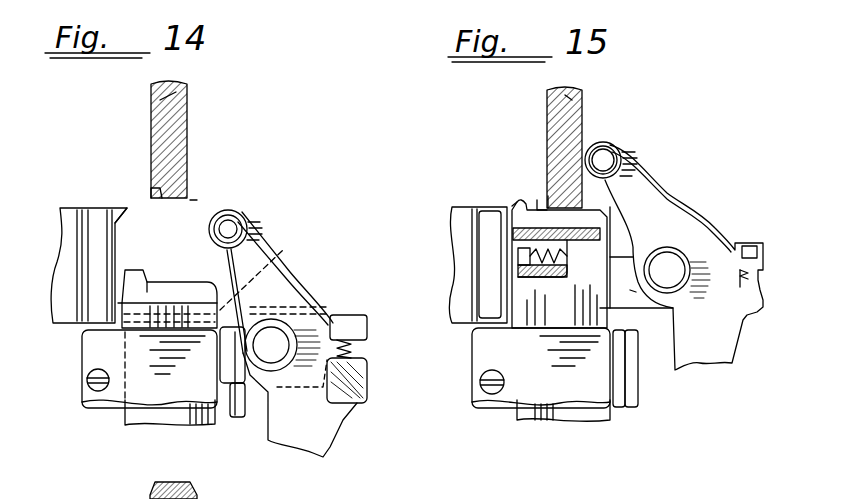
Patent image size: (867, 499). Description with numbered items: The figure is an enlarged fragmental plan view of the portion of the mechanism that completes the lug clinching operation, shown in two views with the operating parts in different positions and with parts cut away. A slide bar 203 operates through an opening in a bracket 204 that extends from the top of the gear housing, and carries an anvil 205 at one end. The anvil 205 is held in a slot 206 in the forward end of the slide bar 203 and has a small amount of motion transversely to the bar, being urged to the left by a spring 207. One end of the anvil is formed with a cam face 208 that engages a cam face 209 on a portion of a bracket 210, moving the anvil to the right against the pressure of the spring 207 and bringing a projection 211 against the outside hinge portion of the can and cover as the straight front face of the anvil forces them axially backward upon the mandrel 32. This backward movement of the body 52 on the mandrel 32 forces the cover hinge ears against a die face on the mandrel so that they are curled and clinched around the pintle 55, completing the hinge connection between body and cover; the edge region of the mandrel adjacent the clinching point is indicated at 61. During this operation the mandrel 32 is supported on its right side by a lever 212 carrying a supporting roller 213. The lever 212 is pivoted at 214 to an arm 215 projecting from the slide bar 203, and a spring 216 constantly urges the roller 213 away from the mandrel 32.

In FIG. 14, the mandrel 32 is at (176, 92).
In FIG. 15, the mandrel 32 is at (565, 95).
In FIG. 14, the body 52 is at (188, 137).
In FIG. 15, the body 52 is at (583, 120).
In FIG. 14, the pintle 55 is at (151, 198).
In FIG. 15, the pintle 55 is at (548, 196).
In FIG. 14, the blade side 61 is at (197, 200).
In FIG. 14, the slide bar 203 is at (190, 412).
In FIG. 15, the slide bar 203 is at (537, 408).
In FIG. 14, the bracket 204 is at (98, 393).
In FIG. 15, the bracket 204 is at (487, 388).
In FIG. 14, the anvil 205 is at (170, 292).
In FIG. 15, the anvil 205 is at (537, 203).
In FIG. 14, the slot 206 is at (280, 272).
In FIG. 15, the spring 207 is at (540, 258).
In FIG. 14, the cam face 208 is at (121, 276).
In FIG. 15, the cam face 208 is at (518, 198).
In FIG. 14, the cam face 209 is at (121, 212).
In FIG. 14, the bracket 210 is at (97, 245).
In FIG. 15, the bracket 210 is at (510, 282).
In FIG. 14, the projection 211 is at (162, 290).
In FIG. 15, the projection 211 is at (541, 198).
In FIG. 14, the lever 212 is at (262, 249).
In FIG. 15, the lever 212 is at (655, 200).
In FIG. 14, the supporting roller 213 is at (236, 212).
In FIG. 15, the supporting roller 213 is at (612, 142).
In FIG. 14, the pivot 214 is at (287, 333).
In FIG. 15, the pivot 214 is at (660, 262).
In FIG. 14, the arm 215 is at (235, 385).
In FIG. 15, the arm 215 is at (630, 290).
In FIG. 14, the spring 216 is at (352, 352).
In FIG. 15, the spring 216 is at (748, 274).